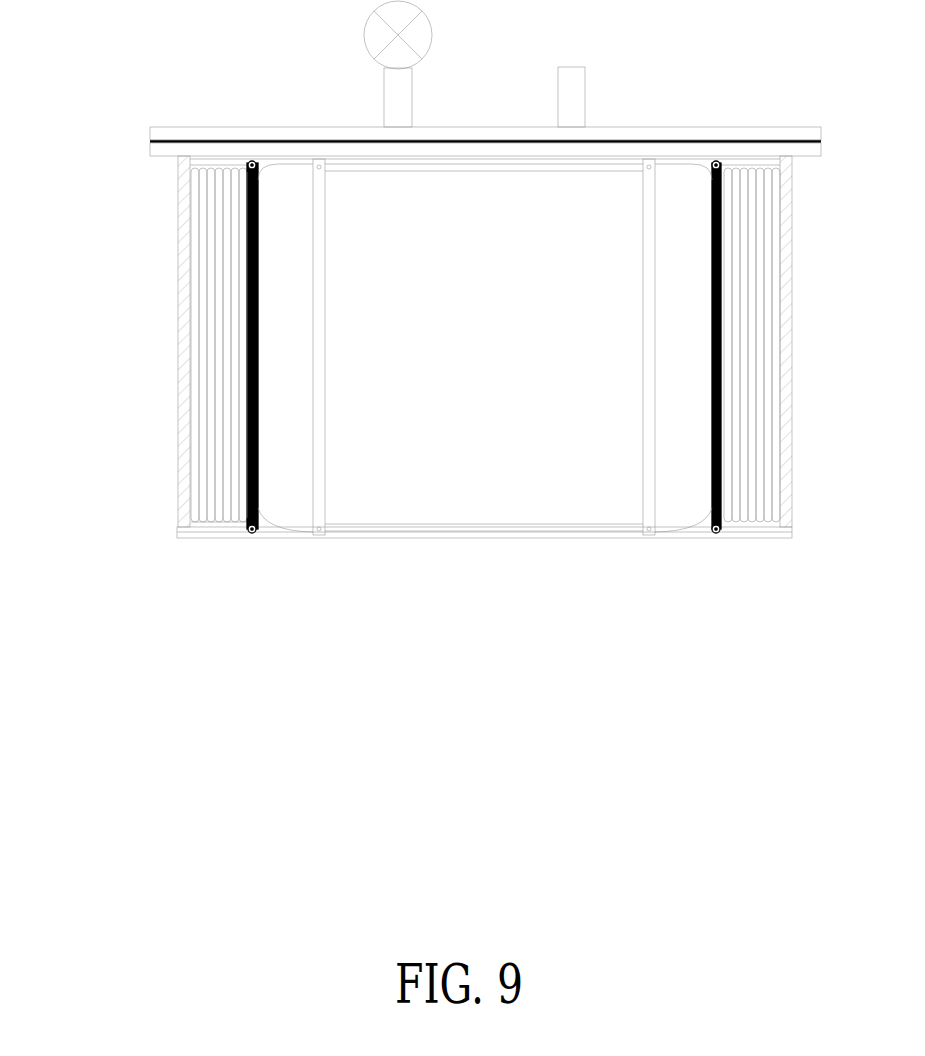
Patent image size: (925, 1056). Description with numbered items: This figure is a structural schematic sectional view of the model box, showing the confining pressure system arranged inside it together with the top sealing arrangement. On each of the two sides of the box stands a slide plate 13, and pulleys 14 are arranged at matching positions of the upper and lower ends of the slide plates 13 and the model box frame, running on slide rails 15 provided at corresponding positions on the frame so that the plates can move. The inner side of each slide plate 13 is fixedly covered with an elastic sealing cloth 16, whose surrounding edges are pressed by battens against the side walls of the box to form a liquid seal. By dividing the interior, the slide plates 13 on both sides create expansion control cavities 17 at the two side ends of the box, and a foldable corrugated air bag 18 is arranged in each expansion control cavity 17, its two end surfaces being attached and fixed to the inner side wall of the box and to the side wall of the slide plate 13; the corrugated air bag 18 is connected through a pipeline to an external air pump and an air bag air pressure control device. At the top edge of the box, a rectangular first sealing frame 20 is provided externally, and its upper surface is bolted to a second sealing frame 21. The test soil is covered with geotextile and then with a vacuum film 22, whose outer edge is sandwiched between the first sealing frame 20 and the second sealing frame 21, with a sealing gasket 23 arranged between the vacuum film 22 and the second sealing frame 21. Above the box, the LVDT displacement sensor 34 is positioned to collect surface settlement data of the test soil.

The slide plate 13 is at (246, 184).
The pulley 14 is at (480, 266).
The slide rail 15 is at (465, 82).
The elastic sealing cloth 16 is at (485, 266).
The expansion control cavity 17 is at (196, 523).
The corrugated air bag 18 is at (213, 353).
The first sealing frame 20 is at (148, 150).
The second sealing frame 21 is at (148, 127).
The vacuum film 22 is at (148, 142).
The sealing gasket 23 is at (147, 138).
The LVDT displacement sensor 34 is at (390, 12).